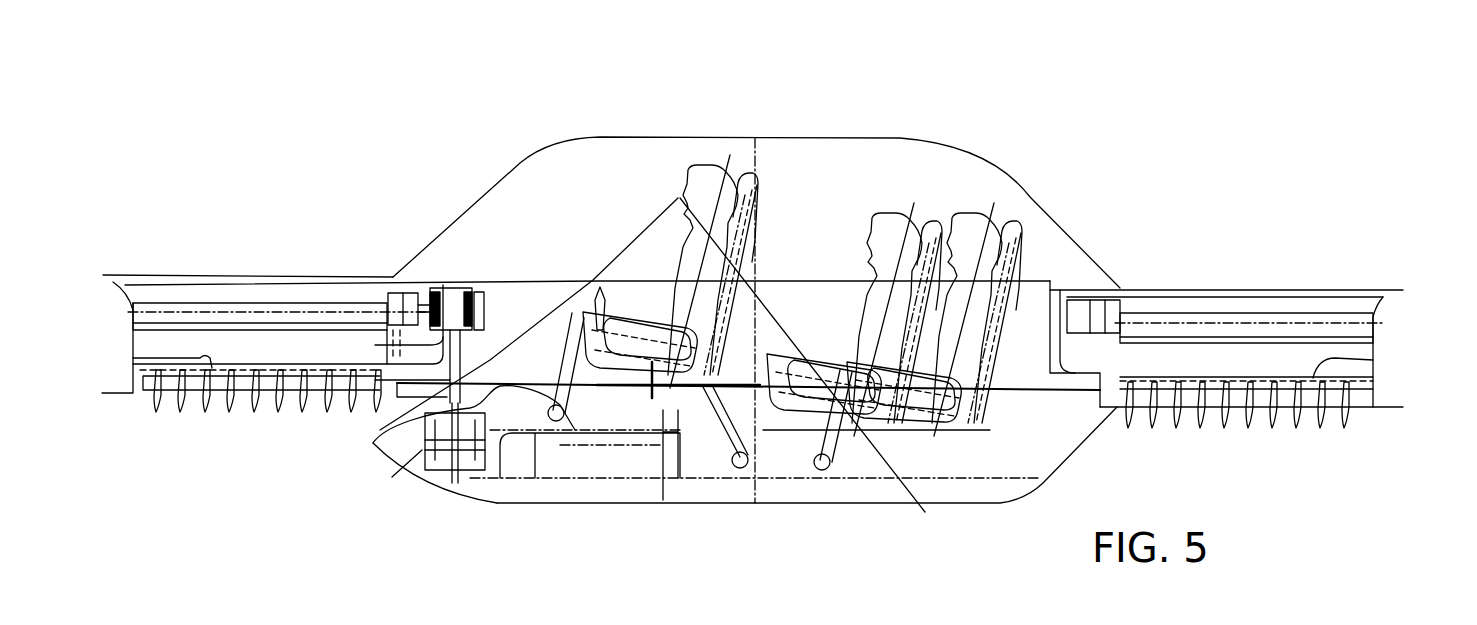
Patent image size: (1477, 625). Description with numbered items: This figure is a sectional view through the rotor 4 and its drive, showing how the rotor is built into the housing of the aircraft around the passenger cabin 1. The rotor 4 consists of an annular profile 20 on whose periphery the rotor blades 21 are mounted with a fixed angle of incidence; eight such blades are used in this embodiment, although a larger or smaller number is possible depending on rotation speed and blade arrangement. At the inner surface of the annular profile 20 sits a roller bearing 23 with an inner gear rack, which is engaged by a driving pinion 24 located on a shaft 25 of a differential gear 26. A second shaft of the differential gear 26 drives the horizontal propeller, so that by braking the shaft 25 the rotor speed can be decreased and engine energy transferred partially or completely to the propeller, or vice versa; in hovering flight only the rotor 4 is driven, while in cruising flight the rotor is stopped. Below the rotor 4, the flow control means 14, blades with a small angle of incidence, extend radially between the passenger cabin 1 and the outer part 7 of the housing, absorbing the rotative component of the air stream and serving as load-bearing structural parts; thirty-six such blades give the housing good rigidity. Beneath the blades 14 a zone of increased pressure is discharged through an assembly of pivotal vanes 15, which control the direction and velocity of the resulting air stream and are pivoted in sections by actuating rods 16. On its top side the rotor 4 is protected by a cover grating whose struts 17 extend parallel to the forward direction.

The passenger cabin 1 is at (818, 138).
The rotor 4 is at (317, 302).
The outer part of the housing 7 is at (112, 295).
The flow control means 14 is at (168, 347).
The pivotal vanes 15 is at (230, 407).
The actuating rods 16 is at (133, 358).
The struts 17 is at (283, 278).
The annular profile 20 is at (403, 287).
The rotor blades 21 is at (233, 313).
The roller bearing 23 is at (433, 287).
The driving pinion 24 is at (492, 288).
The shaft 25 is at (450, 383).
The differential gear 26 is at (437, 467).